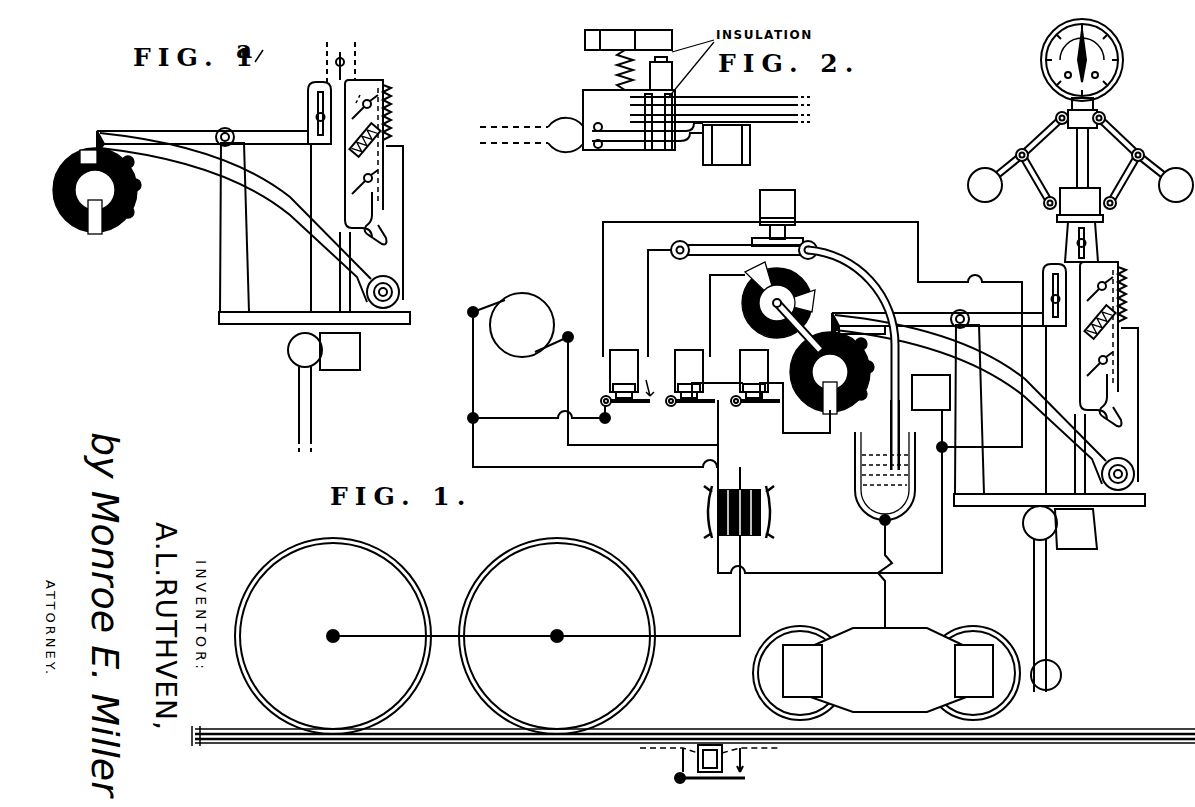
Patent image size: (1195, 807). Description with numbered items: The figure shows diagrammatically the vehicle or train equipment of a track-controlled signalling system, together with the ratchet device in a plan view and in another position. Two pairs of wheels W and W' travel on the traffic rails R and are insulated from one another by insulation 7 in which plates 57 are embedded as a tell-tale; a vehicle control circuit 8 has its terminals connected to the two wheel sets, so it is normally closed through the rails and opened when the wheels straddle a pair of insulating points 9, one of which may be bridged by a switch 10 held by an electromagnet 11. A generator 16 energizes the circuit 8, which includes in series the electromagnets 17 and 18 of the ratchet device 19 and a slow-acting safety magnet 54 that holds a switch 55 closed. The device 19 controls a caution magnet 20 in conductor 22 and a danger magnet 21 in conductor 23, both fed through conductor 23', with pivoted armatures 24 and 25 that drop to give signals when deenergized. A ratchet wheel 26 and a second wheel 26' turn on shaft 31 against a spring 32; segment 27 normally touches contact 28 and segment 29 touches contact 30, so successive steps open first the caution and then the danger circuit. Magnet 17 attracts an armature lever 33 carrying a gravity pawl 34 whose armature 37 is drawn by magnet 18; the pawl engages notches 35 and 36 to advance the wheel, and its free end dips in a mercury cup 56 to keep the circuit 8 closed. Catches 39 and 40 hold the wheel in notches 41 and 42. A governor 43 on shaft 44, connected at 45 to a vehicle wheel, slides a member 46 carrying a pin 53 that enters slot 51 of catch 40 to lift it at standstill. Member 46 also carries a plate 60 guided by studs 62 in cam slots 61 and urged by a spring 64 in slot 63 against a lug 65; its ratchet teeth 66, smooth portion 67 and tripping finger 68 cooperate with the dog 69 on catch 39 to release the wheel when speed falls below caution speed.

In FIG. 1, the insulation 7 is at (710, 534).
In FIG. 1, the vehicle control circuit 8 is at (842, 222).
In FIG. 1, the insulating points 9 is at (711, 728).
In FIG. 1, the switch 10 is at (745, 778).
In FIG. 1, the electromagnets 11 is at (690, 760).
In FIG. 1, the electrical generator 16 is at (520, 300).
In FIG. 1, the electromagnet 17 is at (790, 206).
In FIG. 2, the electromagnet 18 is at (737, 143).
In FIG. 1, the electromagnet 18 is at (931, 392).
In FIG. 1A, the ratchet device 19 is at (84, 254).
In FIG. 2, the ratchet device 19 is at (555, 78).
In FIG. 1, the ratchet device 19 is at (726, 319).
In FIG. 1, the caution electromagnet 20 is at (746, 370).
In FIG. 1, the danger electromagnet 21 is at (686, 364).
In FIG. 1, the conductor 22 is at (790, 435).
In FIG. 1, the conductor 23 is at (687, 285).
In FIG. 1, the conductor 23' is at (504, 397).
In FIG. 1, the pivoted armature 24 is at (762, 404).
In FIG. 1, the pivoted armature 25 is at (694, 404).
In FIG. 1A, the ratchet wheel 26 is at (87, 181).
In FIG. 2, the ratchet wheel 26 is at (601, 120).
In FIG. 1, the ratchet wheel 26 is at (830, 379).
In FIG. 2, the second wheel 26' is at (666, 32).
In FIG. 1, the second wheel 26' is at (839, 262).
In FIG. 1, the segment 27 is at (845, 419).
In FIG. 1A, the contact 28 is at (102, 218).
In FIG. 1, the contact 28 is at (824, 420).
In FIG. 2, the segment 29 is at (605, 45).
In FIG. 1, the segment 29 is at (756, 280).
In FIG. 1, the contact 30 is at (754, 286).
In FIG. 1, the shaft 31 is at (815, 310).
In FIG. 2, the spring 32 is at (616, 73).
In FIG. 2, the armature lever 33 is at (537, 137).
In FIG. 1, the armature lever 33 is at (696, 247).
In FIG. 2, the gravity pawl 34 is at (626, 143).
In FIG. 1, the gravity pawl 34 is at (870, 278).
In FIG. 1A, the notch or tooth 35 is at (132, 193).
In FIG. 1, the notch or tooth 35 is at (875, 374).
In FIG. 1A, the notch or tooth 36 is at (120, 215).
In FIG. 1, the notch or tooth 36 is at (869, 397).
In FIG. 1, the armature 37 is at (896, 412).
In FIG. 1A, the catch 39 is at (175, 152).
In FIG. 2, the catch 39 is at (768, 118).
In FIG. 1, the catch 39 is at (1012, 402).
In FIG. 1A, the catch 40 is at (207, 130).
In FIG. 2, the catch 40 is at (702, 101).
In FIG. 1, the catch 40 is at (937, 307).
In FIG. 1A, the notch or tooth 41 is at (96, 150).
In FIG. 2, the notch or tooth 41 is at (650, 152).
In FIG. 1, the notch or tooth 41 is at (873, 311).
In FIG. 1A, the notch or tooth 42 is at (120, 165).
In FIG. 2, the notch or tooth 42 is at (672, 148).
In FIG. 1, the notch or tooth 42 is at (867, 344).
In FIG. 1, the governor 43 is at (1040, 128).
In FIG. 1, the shaft 44 is at (1077, 175).
In FIG. 1A, the connection 45 is at (297, 382).
In FIG. 1, the connection 45 is at (1069, 599).
In FIG. 1A, the member or plate 46 is at (318, 207).
In FIG. 1, the member or plate 46 is at (1049, 364).
In FIG. 1, the slot 51 is at (1038, 281).
In FIG. 1, the pin or stud 53 is at (1023, 288).
In FIG. 1, the electromagnet 54 is at (619, 362).
In FIG. 1, the switch 55 is at (630, 404).
In FIG. 1, the cup of mercury 56 is at (893, 519).
In FIG. 1, the plates 57 is at (726, 532).
In FIG. 1A, the plate 60 is at (360, 95).
In FIG. 1, the plate 60 is at (1126, 332).
In FIG. 1A, the inclined cam slots 61 is at (392, 117).
In FIG. 1, the inclined cam slots 61 is at (1128, 335).
In FIG. 1A, the studs or pins 62 is at (378, 105).
In FIG. 1, the studs or pins 62 is at (1138, 310).
In FIG. 1A, the inclined slot 63 is at (394, 135).
In FIG. 1, the inclined slot 63 is at (1149, 321).
In FIG. 1A, the spring 64 is at (348, 153).
In FIG. 1, the spring 64 is at (1081, 336).
In FIG. 1A, the lug 65 is at (394, 148).
In FIG. 1, the lug 65 is at (1158, 306).
In FIG. 1A, the ratchet teeth 66 is at (392, 125).
In FIG. 1, the ratchet teeth 66 is at (1153, 274).
In FIG. 1A, the smooth portion 67 is at (388, 165).
In FIG. 1, the smooth portion 67 is at (1163, 334).
In FIG. 1A, the tripping finger 68 is at (384, 236).
In FIG. 1, the tripping finger 68 is at (1135, 400).
In FIG. 1A, the dog 69 is at (396, 210).
In FIG. 1, the dog 69 is at (1153, 405).
In FIG. 1, the traffic rails R is at (463, 745).
In FIG. 1, the wheels W is at (445, 618).
In FIG. 1, the wheels W' is at (886, 657).